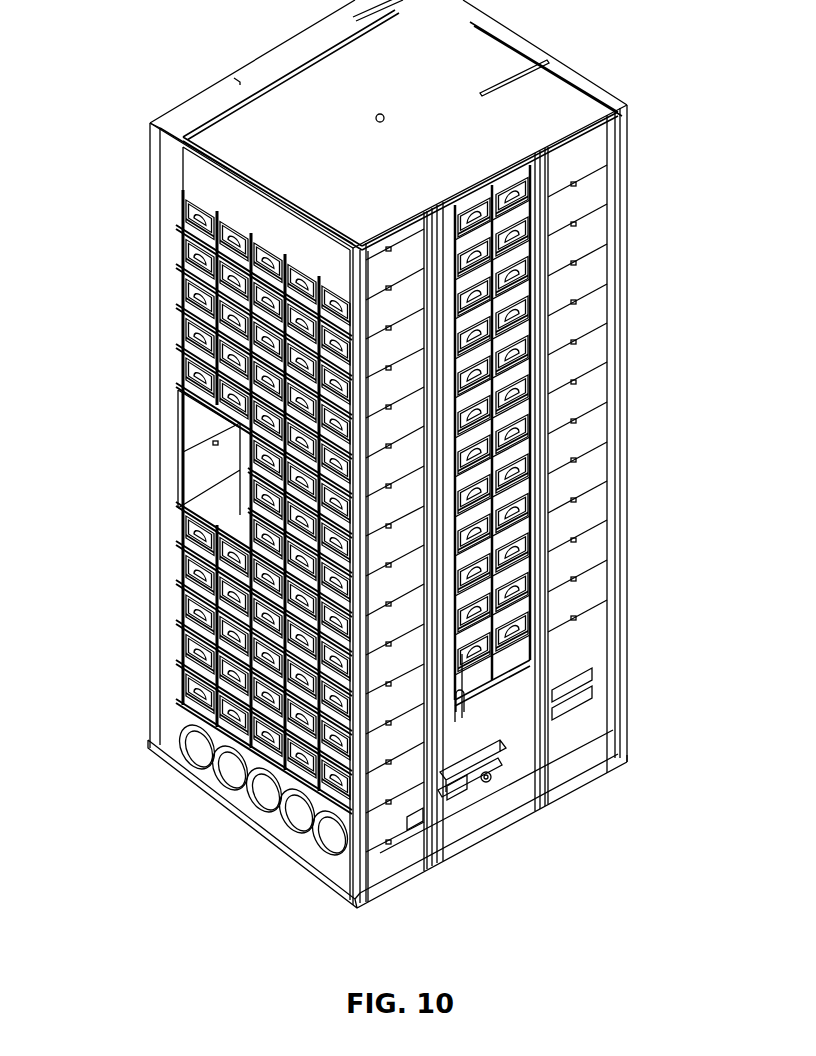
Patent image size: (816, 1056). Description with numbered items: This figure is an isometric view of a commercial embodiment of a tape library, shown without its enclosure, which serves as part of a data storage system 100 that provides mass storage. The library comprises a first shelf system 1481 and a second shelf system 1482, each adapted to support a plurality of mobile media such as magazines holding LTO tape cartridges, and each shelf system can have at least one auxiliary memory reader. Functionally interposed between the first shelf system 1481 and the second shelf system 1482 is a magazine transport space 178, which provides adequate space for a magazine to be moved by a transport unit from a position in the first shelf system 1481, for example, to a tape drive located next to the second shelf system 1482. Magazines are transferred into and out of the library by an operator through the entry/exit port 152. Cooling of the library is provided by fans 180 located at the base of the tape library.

The data storage system 100 is at (392, 454).
The first shelf system 1481 is at (130, 572).
The second shelf system 1482 is at (650, 458).
The entry/exit port 152 is at (203, 477).
The magazine transport space 178 is at (505, 762).
The fans 180 is at (193, 795).